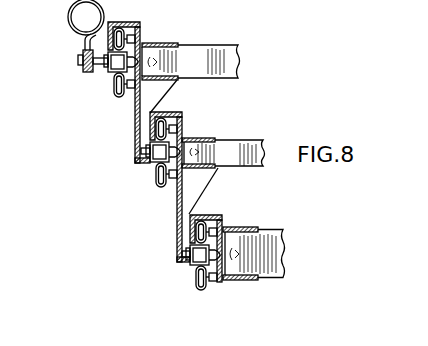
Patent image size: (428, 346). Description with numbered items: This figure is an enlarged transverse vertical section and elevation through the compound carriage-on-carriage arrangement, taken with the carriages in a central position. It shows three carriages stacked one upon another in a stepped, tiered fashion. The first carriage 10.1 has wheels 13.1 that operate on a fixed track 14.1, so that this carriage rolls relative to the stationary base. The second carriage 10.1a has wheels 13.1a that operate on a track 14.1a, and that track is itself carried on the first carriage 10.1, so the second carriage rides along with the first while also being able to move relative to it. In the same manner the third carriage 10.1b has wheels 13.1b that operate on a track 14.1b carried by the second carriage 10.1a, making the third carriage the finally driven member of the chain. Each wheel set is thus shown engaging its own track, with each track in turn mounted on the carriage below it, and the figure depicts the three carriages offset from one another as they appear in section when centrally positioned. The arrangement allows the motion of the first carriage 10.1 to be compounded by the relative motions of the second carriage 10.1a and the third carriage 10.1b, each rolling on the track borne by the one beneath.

The first carriage 10.1 is at (192, 50).
The second carriage 10.1a is at (222, 145).
The third carriage 10.1b is at (262, 232).
The fixed track 14.1 is at (108, 72).
The track 14.1a is at (152, 163).
The track 14.1b is at (194, 265).
The wheels 13.1 is at (115, 95).
The wheels 13.1a is at (157, 189).
The wheels 13.1b is at (200, 290).